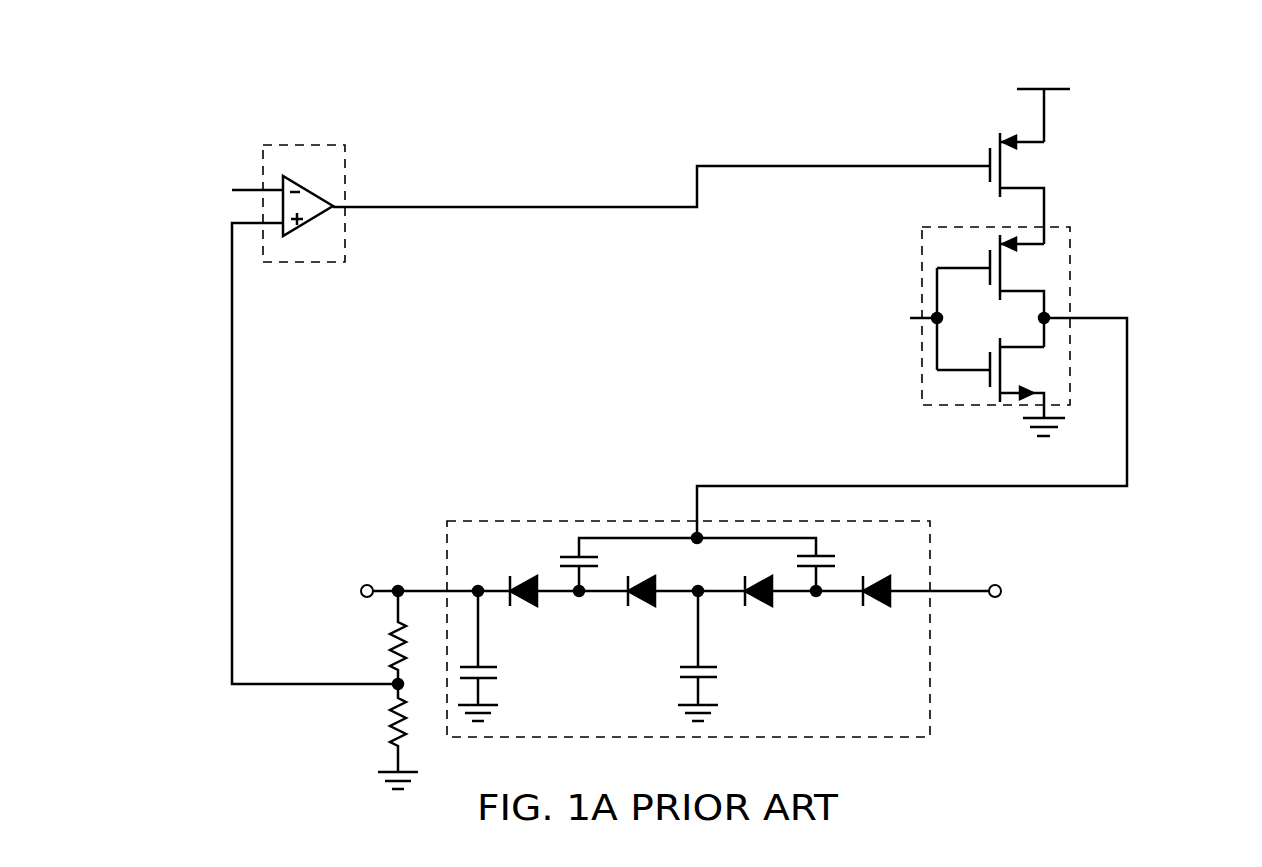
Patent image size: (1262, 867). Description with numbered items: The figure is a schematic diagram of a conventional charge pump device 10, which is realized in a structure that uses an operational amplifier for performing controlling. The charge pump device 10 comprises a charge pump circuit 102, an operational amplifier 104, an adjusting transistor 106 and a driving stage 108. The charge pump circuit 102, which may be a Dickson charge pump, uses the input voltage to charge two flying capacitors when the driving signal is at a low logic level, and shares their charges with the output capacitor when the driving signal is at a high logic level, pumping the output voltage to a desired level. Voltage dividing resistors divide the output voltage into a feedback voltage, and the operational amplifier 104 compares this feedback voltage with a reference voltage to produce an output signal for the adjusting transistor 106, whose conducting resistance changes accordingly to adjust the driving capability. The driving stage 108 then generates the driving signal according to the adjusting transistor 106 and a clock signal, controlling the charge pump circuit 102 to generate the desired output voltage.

The charge pump device 10 is at (1150, 123).
The charge pump circuit 102 is at (930, 552).
The operational amplifier 104 is at (333, 145).
The adjusting transistor 106 is at (1042, 173).
The driving stage 108 is at (1070, 258).